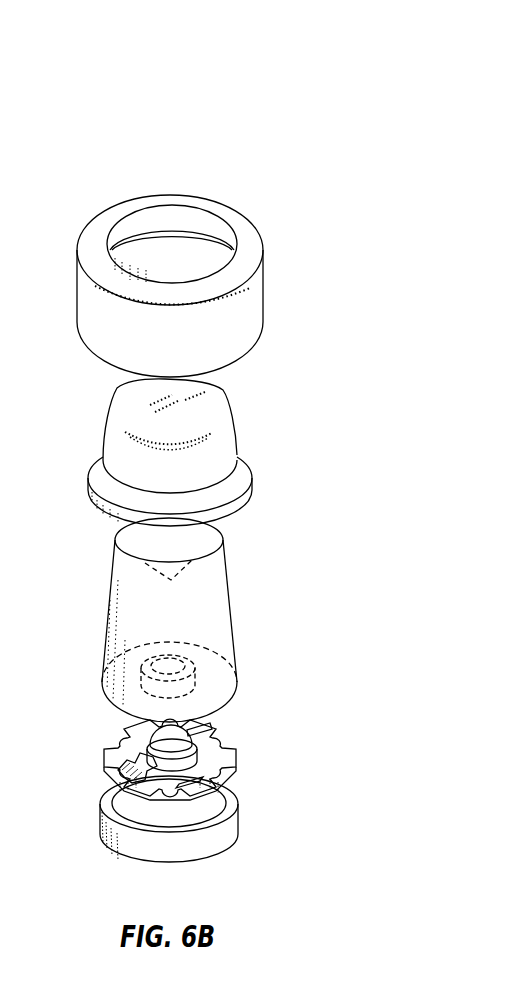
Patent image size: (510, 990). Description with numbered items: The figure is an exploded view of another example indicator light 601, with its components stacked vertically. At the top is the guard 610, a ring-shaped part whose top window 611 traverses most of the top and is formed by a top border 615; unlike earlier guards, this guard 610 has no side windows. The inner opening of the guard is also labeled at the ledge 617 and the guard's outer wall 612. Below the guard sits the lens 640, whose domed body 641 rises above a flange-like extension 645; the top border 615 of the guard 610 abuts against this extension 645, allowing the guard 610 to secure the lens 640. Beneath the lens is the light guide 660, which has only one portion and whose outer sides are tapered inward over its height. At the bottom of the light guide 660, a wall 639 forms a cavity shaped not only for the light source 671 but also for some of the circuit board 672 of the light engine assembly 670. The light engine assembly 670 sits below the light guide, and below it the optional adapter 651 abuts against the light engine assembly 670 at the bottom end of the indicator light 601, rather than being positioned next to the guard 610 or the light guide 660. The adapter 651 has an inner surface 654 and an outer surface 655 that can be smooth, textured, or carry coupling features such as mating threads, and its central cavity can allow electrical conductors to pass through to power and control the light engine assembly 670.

The indicator light 601 is at (97, 155).
The guard 610 is at (218, 259).
The top window 611 is at (198, 235).
The outer cylindrical wall 612 is at (255, 286).
The top border 615 is at (245, 228).
The inner ledge 617 is at (178, 250).
The lens 640 is at (211, 452).
The lens dome 641 is at (218, 451).
The extension 645 is at (246, 491).
The light guide 660 is at (216, 620).
The wall 639 is at (168, 666).
The light engine assembly 670 is at (210, 764).
The light source 671 is at (185, 745).
The circuit board 672 is at (222, 735).
The adapter 651 is at (137, 828).
The inner surface 654 is at (215, 797).
The outer surface 655 is at (125, 845).